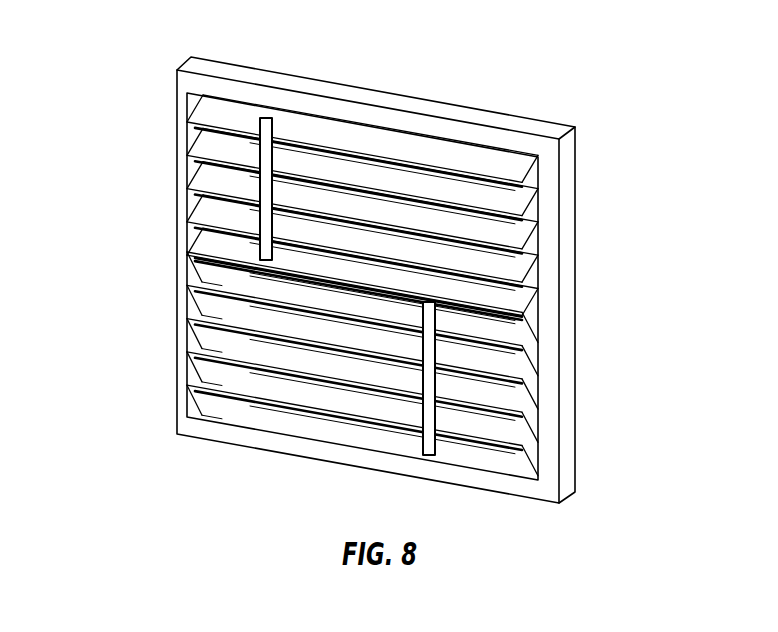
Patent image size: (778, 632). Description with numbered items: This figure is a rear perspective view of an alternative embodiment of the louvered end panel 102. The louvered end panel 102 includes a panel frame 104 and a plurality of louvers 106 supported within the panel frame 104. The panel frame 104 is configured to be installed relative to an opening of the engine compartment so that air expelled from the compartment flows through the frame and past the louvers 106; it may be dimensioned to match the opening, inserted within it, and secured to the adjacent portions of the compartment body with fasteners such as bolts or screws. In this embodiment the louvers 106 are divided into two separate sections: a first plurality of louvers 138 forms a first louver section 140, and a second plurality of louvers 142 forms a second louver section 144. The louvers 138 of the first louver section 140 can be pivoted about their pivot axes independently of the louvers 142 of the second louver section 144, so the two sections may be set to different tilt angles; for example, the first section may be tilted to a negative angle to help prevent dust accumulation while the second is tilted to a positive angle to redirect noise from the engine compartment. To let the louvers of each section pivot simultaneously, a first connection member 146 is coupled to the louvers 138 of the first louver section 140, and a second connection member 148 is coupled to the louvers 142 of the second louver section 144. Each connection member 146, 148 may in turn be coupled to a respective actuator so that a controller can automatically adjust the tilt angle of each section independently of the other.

The louvered end panel 102 is at (363, 253).
The panel frame 104 is at (533, 142).
The louvers 106 is at (363, 285).
The first plurality of louvers 138 is at (296, 364).
The first louver section 140 is at (157, 255).
The second plurality of louvers 142 is at (296, 209).
The second louver section 144 is at (157, 95).
The first connection member 146 is at (430, 410).
The second connection member 148 is at (267, 157).